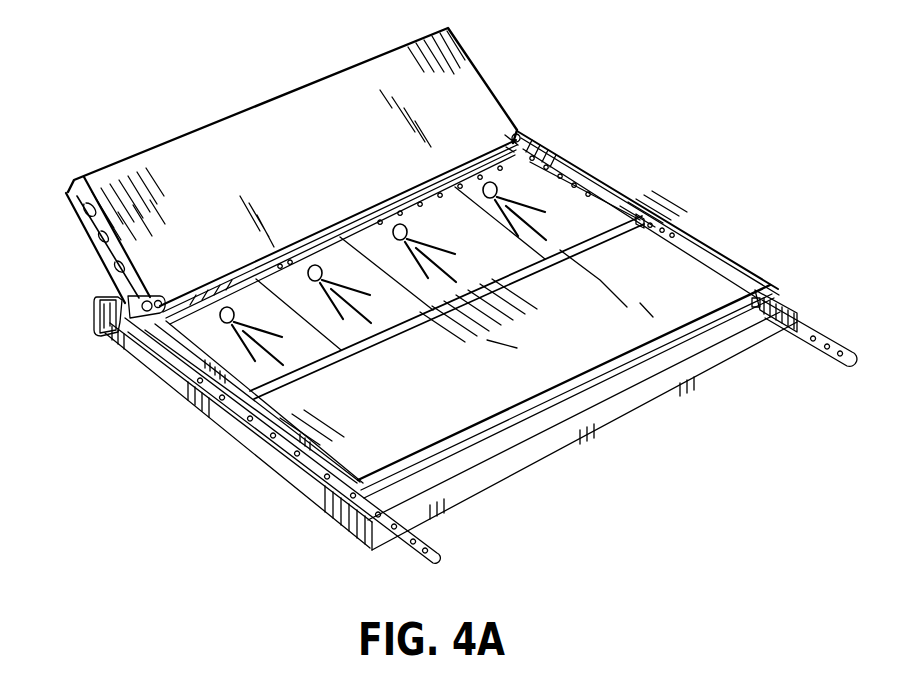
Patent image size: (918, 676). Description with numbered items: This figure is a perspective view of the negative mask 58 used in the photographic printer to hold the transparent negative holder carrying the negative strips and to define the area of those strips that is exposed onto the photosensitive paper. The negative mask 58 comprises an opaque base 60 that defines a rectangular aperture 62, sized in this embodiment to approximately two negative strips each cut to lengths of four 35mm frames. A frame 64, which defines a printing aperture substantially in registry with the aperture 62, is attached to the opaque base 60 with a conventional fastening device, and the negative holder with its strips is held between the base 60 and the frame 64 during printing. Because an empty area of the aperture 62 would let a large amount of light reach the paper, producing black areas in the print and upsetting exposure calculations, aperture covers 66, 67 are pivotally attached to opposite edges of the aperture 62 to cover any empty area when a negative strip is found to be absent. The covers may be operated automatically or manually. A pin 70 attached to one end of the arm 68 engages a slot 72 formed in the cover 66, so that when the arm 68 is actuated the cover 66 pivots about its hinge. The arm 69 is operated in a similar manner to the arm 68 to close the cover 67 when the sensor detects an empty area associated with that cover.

The negative mask 58 is at (212, 455).
The opaque base 60 is at (104, 334).
The aperture 62 is at (566, 188).
The frame 64 is at (163, 372).
The aperture cover 66 is at (265, 105).
The aperture cover 67 is at (425, 391).
The arm 68 is at (438, 557).
The arm 69 is at (851, 358).
The pin 70 is at (110, 300).
The slot 72 is at (83, 220).